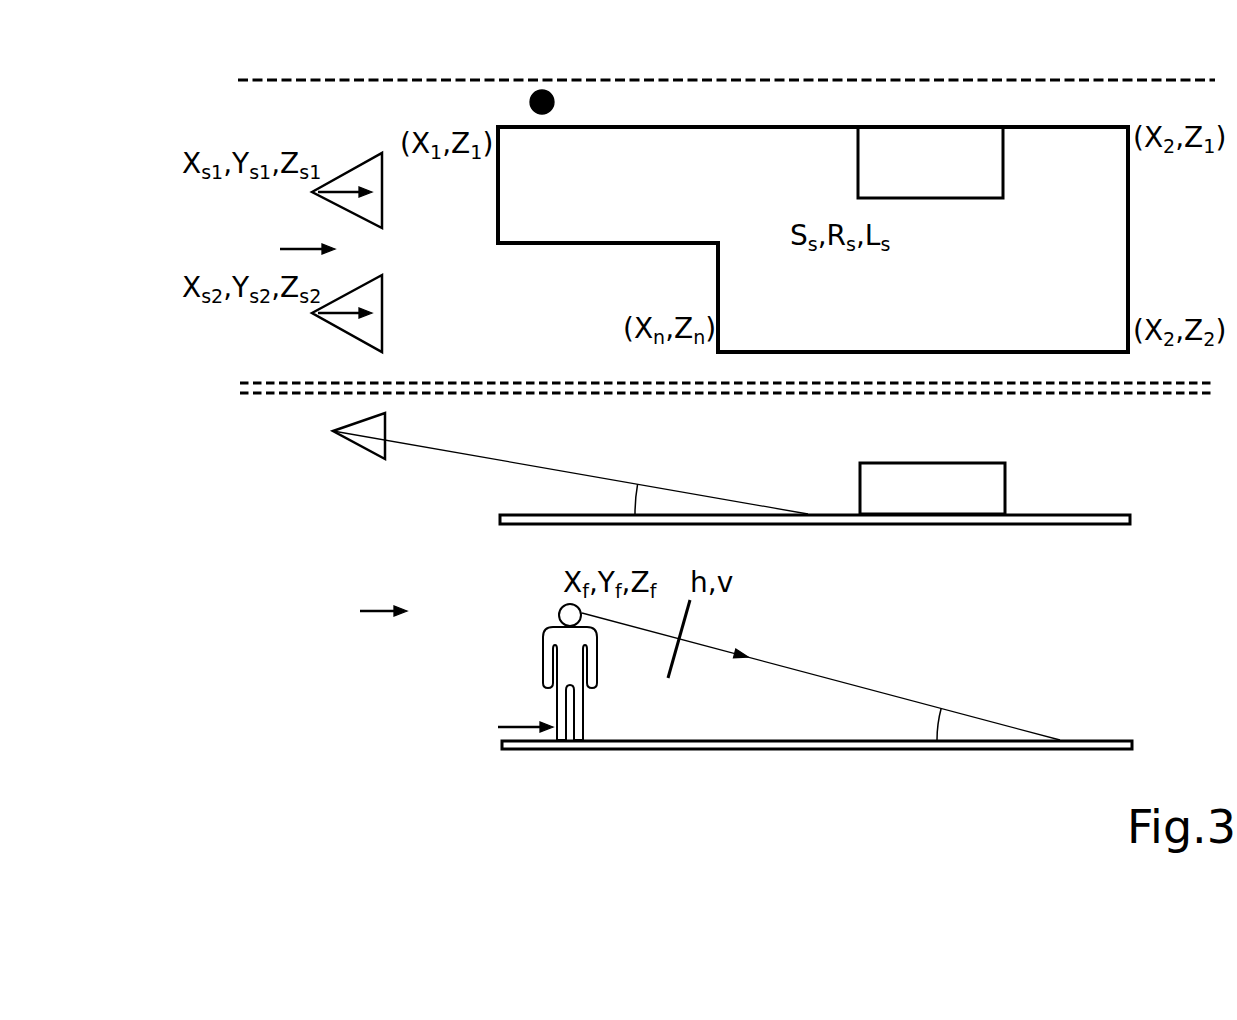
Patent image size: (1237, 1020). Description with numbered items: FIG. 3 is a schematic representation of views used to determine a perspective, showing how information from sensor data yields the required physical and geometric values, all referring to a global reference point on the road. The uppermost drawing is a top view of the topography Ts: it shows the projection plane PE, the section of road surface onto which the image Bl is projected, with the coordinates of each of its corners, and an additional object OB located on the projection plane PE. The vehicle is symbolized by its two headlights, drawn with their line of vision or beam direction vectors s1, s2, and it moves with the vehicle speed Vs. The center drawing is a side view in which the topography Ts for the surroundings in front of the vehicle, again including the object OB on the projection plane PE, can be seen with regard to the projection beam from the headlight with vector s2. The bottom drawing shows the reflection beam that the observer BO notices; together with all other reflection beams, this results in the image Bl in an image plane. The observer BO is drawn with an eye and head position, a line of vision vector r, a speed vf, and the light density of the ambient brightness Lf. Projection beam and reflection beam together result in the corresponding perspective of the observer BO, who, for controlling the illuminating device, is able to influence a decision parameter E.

The observer BO is at (496, 335).
The object OB is at (933, 127).
The projection plane PE is at (815, 459).
The line of vision vector of first headlight s1 is at (347, 200).
The line of vision vector of second headlight s2 is at (348, 379).
The vehicle speed Vs is at (288, 247).
The topography Ts is at (1090, 489).
The decision parameter E is at (372, 612).
The light density of the ambient brightness Lf is at (552, 672).
The speed of observer vf is at (525, 712).
The line of vision vector of observer r is at (821, 676).
The image Bl is at (671, 658).